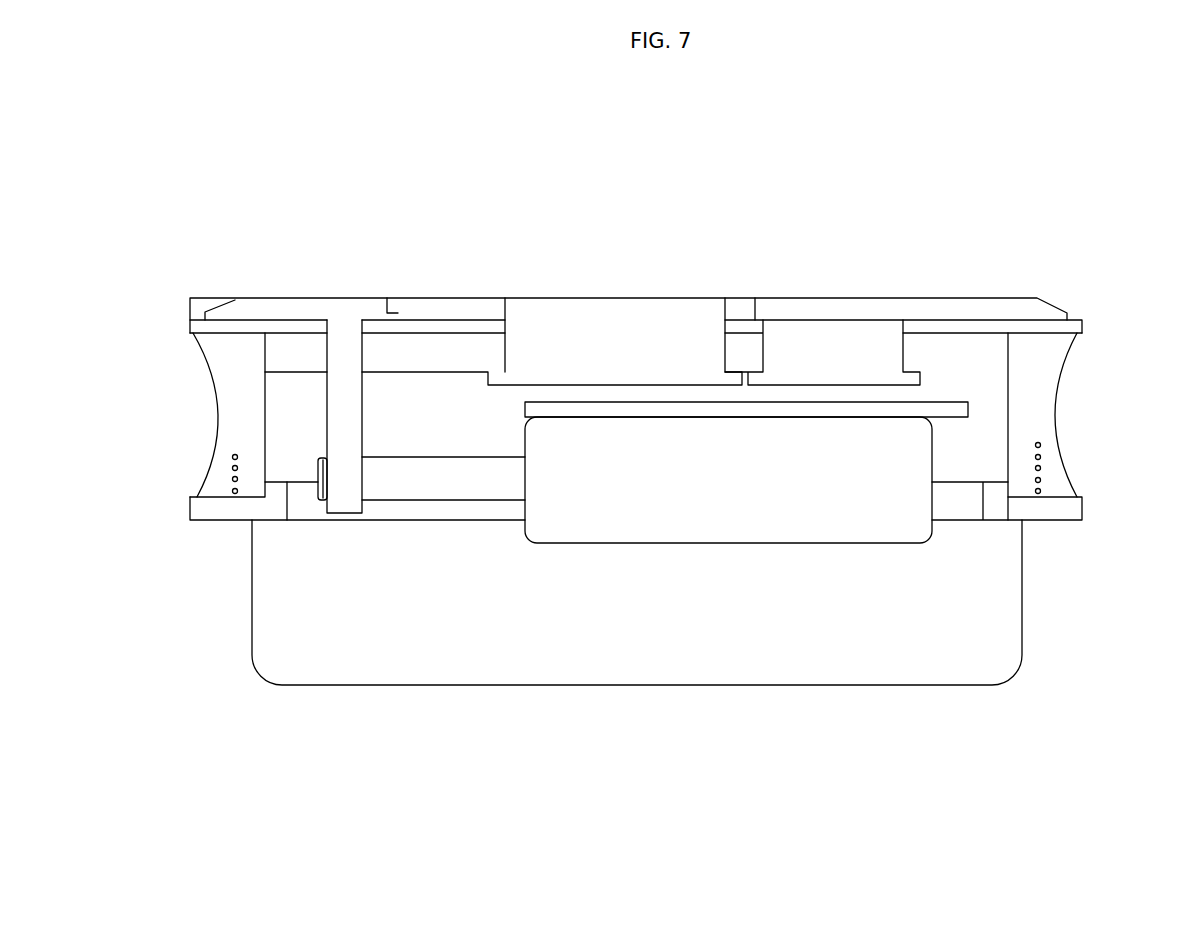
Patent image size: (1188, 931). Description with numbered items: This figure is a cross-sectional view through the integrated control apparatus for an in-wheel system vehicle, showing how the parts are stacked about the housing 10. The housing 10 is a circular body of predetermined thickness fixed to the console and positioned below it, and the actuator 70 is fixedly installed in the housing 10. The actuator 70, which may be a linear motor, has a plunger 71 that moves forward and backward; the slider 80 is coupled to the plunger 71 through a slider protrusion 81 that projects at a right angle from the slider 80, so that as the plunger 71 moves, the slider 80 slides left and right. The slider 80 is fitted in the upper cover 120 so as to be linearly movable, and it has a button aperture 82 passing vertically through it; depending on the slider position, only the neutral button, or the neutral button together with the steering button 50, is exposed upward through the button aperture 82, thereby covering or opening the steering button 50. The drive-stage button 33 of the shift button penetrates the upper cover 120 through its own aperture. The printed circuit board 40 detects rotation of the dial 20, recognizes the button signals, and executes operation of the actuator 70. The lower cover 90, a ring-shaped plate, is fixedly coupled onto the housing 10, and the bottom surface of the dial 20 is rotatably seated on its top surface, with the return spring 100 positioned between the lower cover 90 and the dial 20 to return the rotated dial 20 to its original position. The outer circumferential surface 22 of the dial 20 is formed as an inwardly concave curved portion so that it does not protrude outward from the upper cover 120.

The housing 10 is at (590, 668).
The dial 20 is at (1043, 364).
The outer circumferential surface 22 is at (1056, 415).
The drive (D)-stage button 33 is at (573, 350).
The printed circuit board 40 is at (659, 412).
The steering button 50 is at (831, 355).
The actuator 70 is at (803, 478).
The plunger 71 is at (447, 477).
The slider 80 is at (280, 305).
The slider protrusion 81 is at (337, 431).
The button aperture 82 is at (390, 313).
The lower cover 90 is at (1072, 507).
The return spring 100 is at (1040, 455).
The upper cover 120 is at (1011, 305).